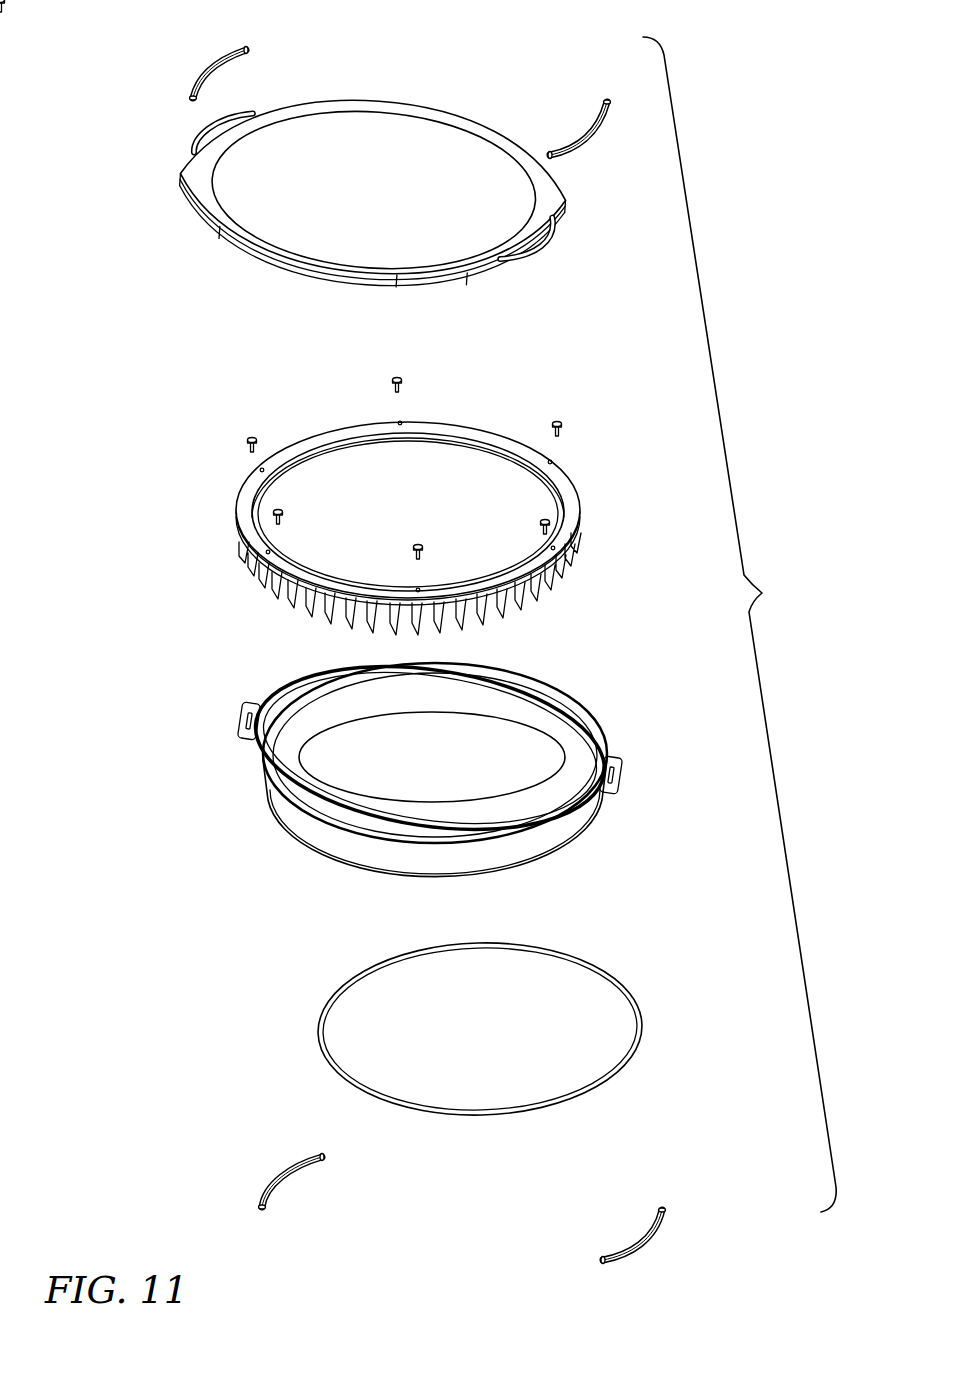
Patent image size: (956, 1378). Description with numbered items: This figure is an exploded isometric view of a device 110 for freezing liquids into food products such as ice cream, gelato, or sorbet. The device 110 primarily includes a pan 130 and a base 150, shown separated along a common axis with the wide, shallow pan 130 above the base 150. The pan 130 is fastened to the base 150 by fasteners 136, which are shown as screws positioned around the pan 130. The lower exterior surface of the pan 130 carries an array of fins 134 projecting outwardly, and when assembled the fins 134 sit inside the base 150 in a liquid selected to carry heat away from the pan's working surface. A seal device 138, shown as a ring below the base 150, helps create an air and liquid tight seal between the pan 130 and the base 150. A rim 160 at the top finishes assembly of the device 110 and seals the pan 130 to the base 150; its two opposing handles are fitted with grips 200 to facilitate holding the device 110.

The device 110 is at (739, 624).
The pan 130 is at (574, 500).
The fins 134 is at (283, 584).
The fasteners 136 is at (563, 428).
The seal device 138 is at (320, 1016).
The base 150 is at (252, 760).
The rim 160 is at (544, 187).
The grips 200 is at (222, 57).